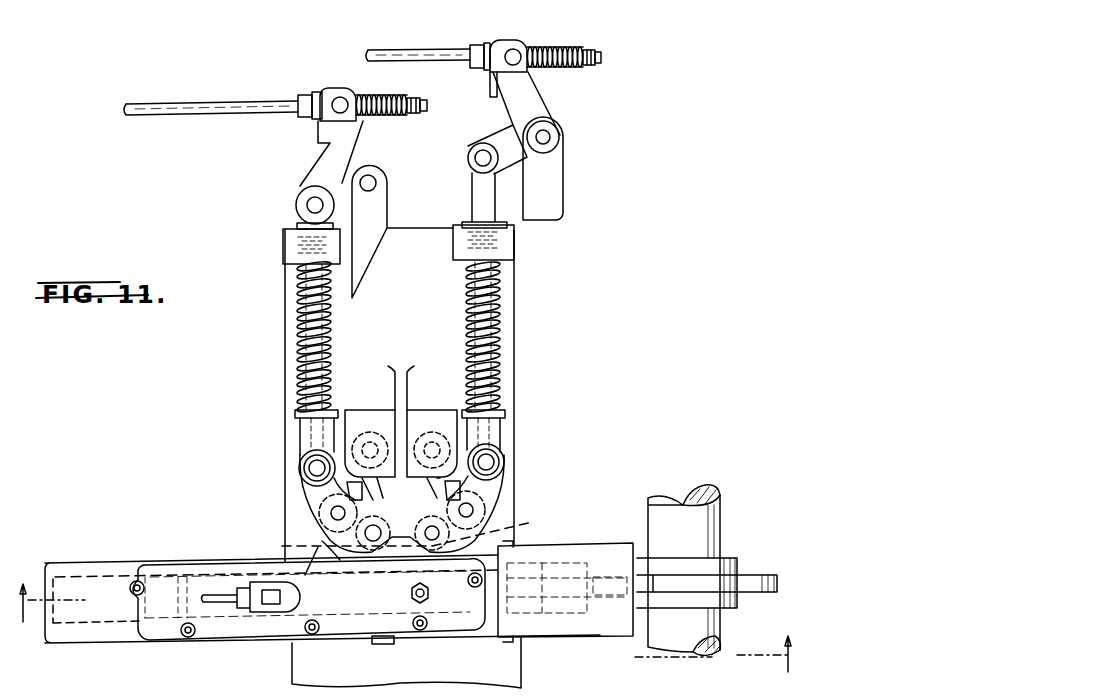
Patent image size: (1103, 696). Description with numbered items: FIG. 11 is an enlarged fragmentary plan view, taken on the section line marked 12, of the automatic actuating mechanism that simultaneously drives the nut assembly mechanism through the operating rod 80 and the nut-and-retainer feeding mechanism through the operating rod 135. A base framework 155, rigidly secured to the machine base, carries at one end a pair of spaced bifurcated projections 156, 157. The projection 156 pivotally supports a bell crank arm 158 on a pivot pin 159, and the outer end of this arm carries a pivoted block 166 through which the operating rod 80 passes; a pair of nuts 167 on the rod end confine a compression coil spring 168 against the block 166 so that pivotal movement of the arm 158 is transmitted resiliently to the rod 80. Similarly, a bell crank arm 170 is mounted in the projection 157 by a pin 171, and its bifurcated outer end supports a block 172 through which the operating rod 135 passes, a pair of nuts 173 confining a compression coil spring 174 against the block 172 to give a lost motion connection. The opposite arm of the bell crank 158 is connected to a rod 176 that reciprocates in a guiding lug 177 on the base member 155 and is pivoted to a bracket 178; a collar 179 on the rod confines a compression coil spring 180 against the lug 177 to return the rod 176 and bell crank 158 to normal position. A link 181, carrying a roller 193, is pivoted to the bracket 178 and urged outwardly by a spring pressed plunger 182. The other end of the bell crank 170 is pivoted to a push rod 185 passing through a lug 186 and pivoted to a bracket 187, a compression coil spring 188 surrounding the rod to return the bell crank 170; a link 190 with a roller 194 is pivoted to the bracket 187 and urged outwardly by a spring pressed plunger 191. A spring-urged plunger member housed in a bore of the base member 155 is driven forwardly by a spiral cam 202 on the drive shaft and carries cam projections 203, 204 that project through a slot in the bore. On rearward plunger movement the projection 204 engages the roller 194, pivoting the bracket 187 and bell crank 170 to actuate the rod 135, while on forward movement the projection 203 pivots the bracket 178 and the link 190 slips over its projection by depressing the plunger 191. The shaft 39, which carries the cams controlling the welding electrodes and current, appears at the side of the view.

The operating rod 80 is at (282, 100).
The block 166 is at (316, 92).
The nuts 167 is at (417, 99).
The compression coil spring 168 is at (397, 114).
The operating rod 135 is at (396, 50).
The block 172 is at (486, 42).
The compression coil spring 174 is at (542, 45).
The nuts 173 is at (600, 52).
The bell crank arm 170 is at (548, 104).
The pin 171 is at (556, 137).
The bifurcated projection 157 is at (560, 192).
The bell crank arm 158 is at (343, 150).
The pivot pin 159 is at (378, 183).
The bifurcated projection 156 is at (386, 212).
The guiding lug 177 is at (288, 244).
The lug 186 is at (517, 292).
The rod 176 is at (298, 352).
The compression coil spring 180 is at (318, 350).
The push rod 185 is at (500, 332).
The compression coil spring 188 is at (500, 374).
The collar 179 is at (295, 415).
The bracket 178 is at (312, 490).
The bracket 187 is at (500, 480).
The base framework 155 is at (515, 492).
The link 190 is at (492, 522).
The spring pressed plunger 182 is at (378, 496).
The link 181 is at (358, 518).
The spring pressed plunger 191 is at (402, 531).
The roller 193 is at (282, 546).
The roller 194 is at (532, 522).
The cam projection 203 is at (318, 547).
The section line 12 is at (401, 620).
The cam projection 204 is at (307, 601).
The spiral cam 202 is at (747, 576).
The shaft 39 is at (720, 514).